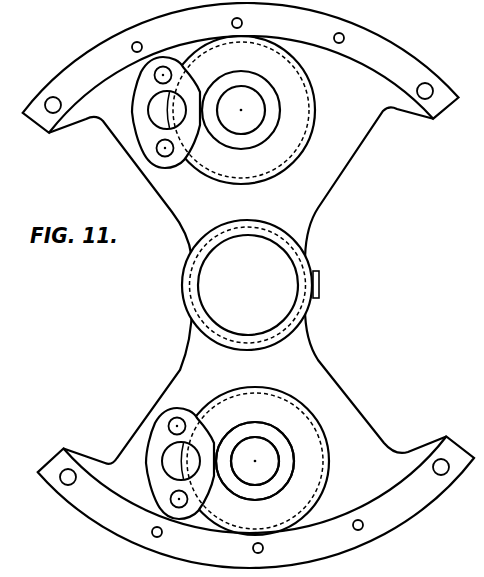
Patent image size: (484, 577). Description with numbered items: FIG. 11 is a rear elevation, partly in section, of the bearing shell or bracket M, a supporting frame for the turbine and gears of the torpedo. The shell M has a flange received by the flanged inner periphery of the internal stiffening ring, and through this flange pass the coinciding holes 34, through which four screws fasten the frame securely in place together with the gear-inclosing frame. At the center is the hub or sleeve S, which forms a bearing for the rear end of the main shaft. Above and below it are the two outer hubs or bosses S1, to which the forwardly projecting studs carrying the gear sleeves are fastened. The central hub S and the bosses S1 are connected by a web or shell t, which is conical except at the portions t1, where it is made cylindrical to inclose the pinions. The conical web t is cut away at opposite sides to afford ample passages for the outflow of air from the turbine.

The coinciding holes 34 is at (52, 103).
The bearing shell or bracket M is at (244, 285).
The web or shell t is at (247, 285).
The cylindrical portions of web t1 is at (242, 285).
The central hub or sleeve S is at (284, 326).
The hubs or bosses S1 is at (248, 285).